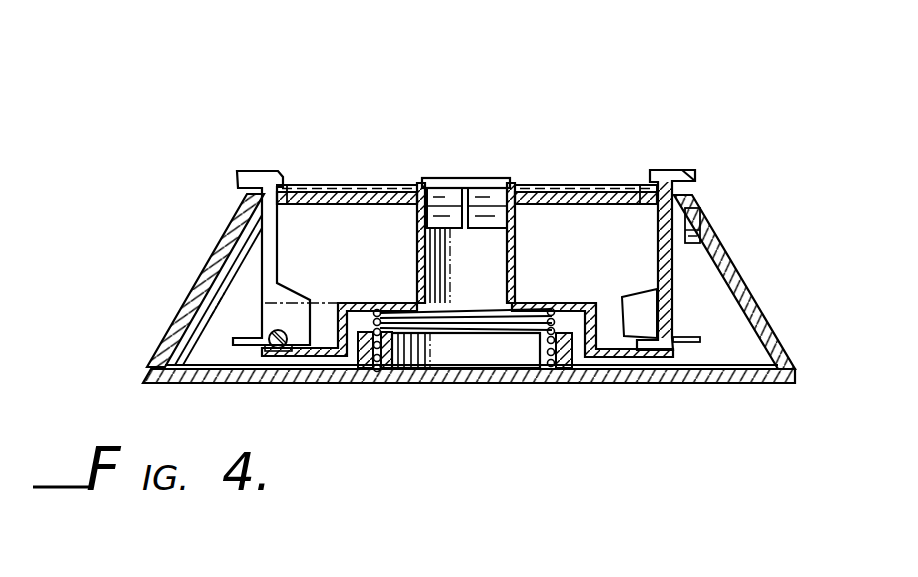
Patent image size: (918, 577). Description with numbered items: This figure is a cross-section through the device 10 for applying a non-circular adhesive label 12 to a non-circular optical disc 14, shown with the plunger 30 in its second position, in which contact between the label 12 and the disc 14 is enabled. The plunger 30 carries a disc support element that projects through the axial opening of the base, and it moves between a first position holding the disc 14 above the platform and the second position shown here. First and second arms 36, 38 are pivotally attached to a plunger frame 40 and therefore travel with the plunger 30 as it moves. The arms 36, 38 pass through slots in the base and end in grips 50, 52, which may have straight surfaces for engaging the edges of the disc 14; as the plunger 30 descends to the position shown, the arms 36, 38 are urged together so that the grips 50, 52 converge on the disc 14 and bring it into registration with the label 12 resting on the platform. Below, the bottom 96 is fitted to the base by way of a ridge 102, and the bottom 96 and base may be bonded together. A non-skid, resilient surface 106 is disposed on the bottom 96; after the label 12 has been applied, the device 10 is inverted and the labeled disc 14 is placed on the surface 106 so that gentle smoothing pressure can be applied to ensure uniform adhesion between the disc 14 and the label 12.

The device 10 is at (740, 200).
The non-circular adhesive label 12 is at (340, 186).
The non-circular optical disc 14 is at (383, 186).
The plunger 30 is at (538, 251).
The first arm 36 is at (666, 168).
The second arm 38 is at (253, 160).
The plunger frame 40 is at (553, 304).
The grip 50 is at (650, 185).
The grip 52 is at (287, 186).
The bottom 96 is at (723, 384).
The ridge 102 is at (763, 361).
The non-skid, resilient surface 106 is at (626, 384).